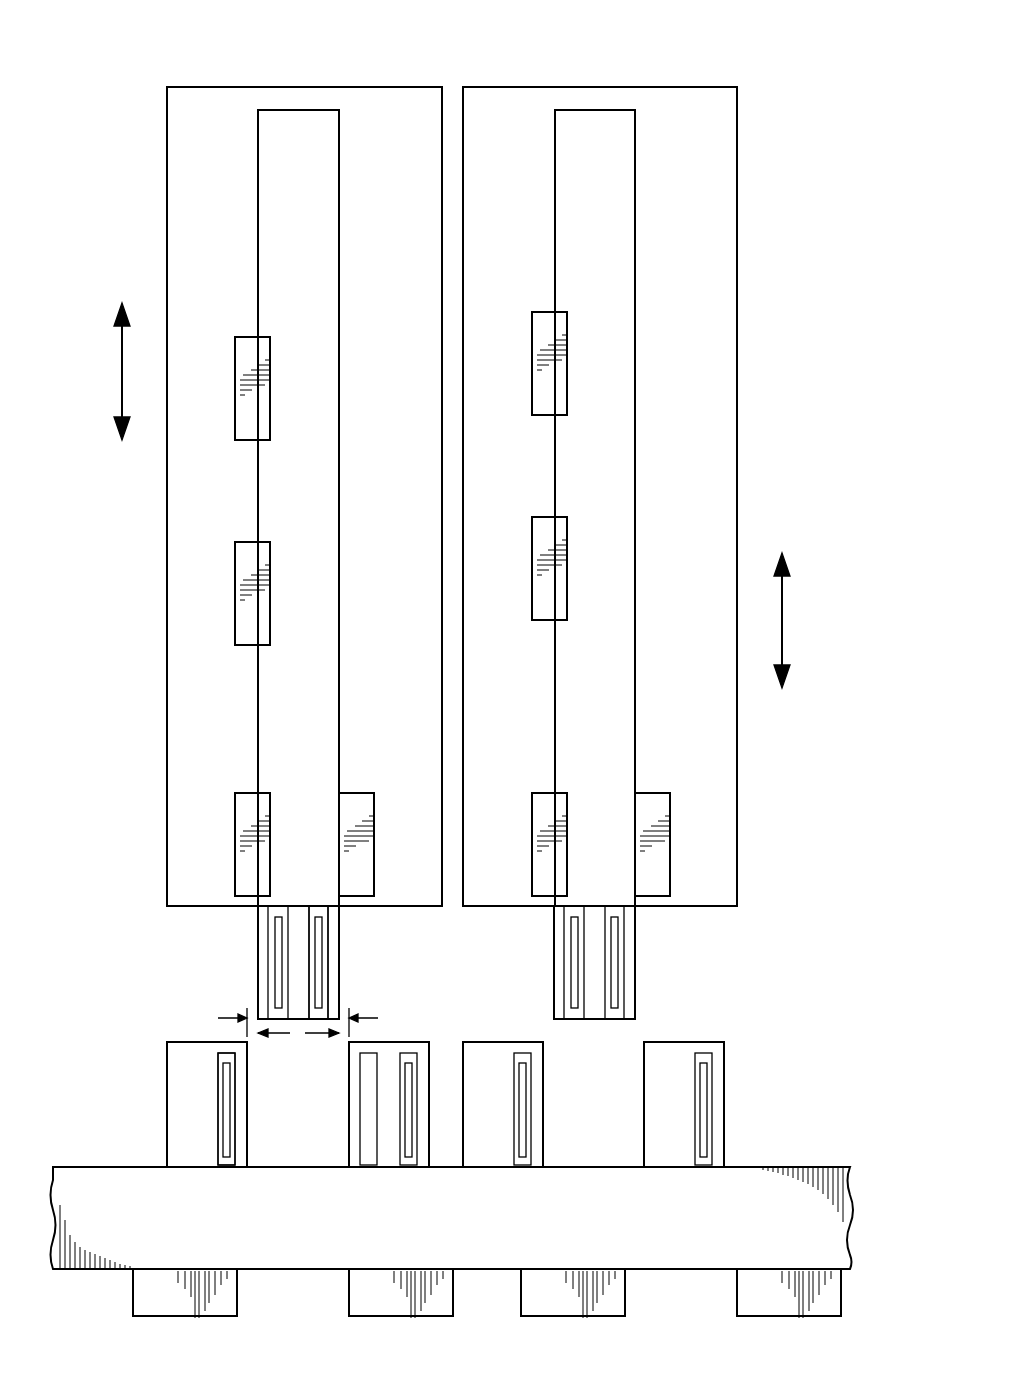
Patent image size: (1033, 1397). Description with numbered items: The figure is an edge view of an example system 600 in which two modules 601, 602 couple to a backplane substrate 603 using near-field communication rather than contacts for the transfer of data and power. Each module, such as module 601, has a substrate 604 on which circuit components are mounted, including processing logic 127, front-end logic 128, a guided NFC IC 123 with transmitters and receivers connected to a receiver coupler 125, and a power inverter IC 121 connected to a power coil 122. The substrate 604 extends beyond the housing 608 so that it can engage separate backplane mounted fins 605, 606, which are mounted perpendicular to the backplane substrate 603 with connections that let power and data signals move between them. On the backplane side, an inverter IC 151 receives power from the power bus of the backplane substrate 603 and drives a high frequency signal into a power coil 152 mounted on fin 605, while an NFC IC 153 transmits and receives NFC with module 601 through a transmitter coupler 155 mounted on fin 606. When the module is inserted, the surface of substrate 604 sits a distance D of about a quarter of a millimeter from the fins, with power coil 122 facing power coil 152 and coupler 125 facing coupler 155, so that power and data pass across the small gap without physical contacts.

The system 600 is at (104, 56).
The module 601 is at (300, 86).
The module 602 is at (600, 86).
The backplane substrate 603 is at (677, 1270).
The substrate 604 is at (258, 222).
The backplane mounted fin 605 is at (167, 1072).
The backplane mounted fin 606 is at (349, 1105).
The housing 608 is at (167, 680).
The power inverter IC 121 is at (235, 810).
The power coil 122 is at (268, 940).
The guided NFC IC 123 is at (372, 810).
The receiver coupler 125 is at (328, 940).
The processing logic 127 is at (235, 560).
The front-end logic 128 is at (235, 355).
The inverter IC 151 is at (133, 1292).
The power coil 152 is at (218, 1140).
The NFC IC 153 is at (349, 1292).
The transmitter coupler 155 is at (360, 1147).